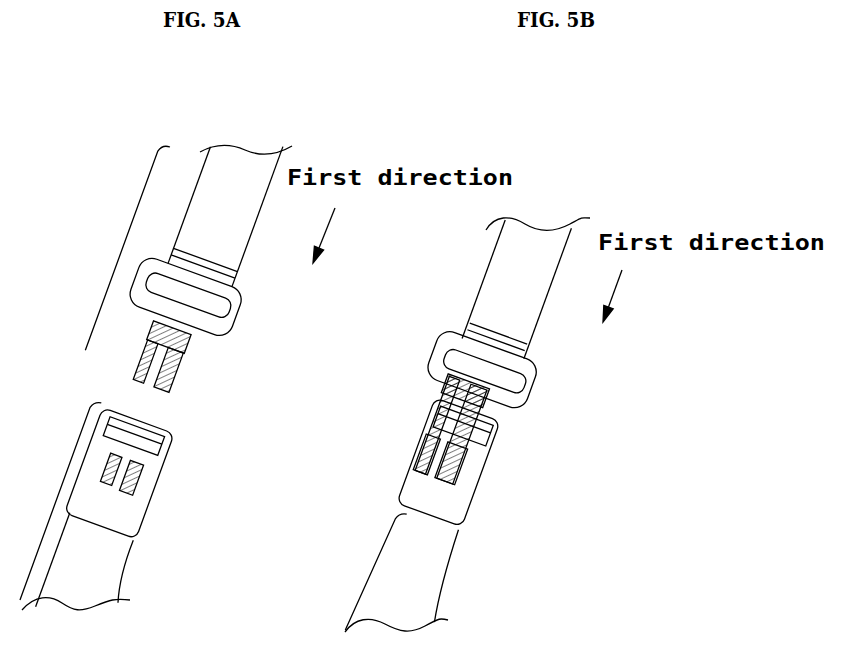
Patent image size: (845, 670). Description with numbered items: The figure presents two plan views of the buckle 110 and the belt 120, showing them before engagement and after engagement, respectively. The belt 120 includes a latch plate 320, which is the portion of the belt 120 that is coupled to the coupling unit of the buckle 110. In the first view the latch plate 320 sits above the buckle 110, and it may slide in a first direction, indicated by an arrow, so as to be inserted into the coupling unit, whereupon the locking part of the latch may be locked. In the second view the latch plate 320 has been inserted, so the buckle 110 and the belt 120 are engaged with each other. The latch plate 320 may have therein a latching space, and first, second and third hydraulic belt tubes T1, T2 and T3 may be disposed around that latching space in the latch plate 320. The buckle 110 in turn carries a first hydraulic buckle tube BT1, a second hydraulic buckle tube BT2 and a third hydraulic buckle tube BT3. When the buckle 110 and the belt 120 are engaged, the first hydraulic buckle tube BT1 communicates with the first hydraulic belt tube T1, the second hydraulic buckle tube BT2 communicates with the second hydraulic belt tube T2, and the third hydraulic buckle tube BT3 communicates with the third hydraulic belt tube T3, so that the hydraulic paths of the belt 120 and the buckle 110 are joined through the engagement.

In FIG. 5A, the buckle 110 is at (119, 516).
In FIG. 5B, the buckle 110 is at (449, 527).
In FIG. 5A, the belt 120 is at (125, 242).
In FIG. 5B, the belt 120 is at (505, 305).
In FIG. 5A, the latch plate 320 is at (211, 359).
In FIG. 5A, the first hydraulic belt tube T1 is at (178, 312).
In FIG. 5B, the first hydraulic belt tube T1 is at (447, 395).
In FIG. 5A, the second hydraulic belt tube T2 is at (197, 332).
In FIG. 5B, the second hydraulic belt tube T2 is at (487, 432).
In FIG. 5A, the third hydraulic belt tube T3 is at (187, 358).
In FIG. 5B, the third hydraulic belt tube T3 is at (503, 414).
In FIG. 5A, the first hydraulic buckle tube BT1 is at (127, 452).
In FIG. 5B, the first hydraulic buckle tube BT1 is at (437, 442).
In FIG. 5A, the second hydraulic buckle tube BT2 is at (125, 498).
In FIG. 5B, the second hydraulic buckle tube BT2 is at (466, 474).
In FIG. 5A, the third hydraulic buckle tube BT3 is at (143, 478).
In FIG. 5B, the third hydraulic buckle tube BT3 is at (477, 461).